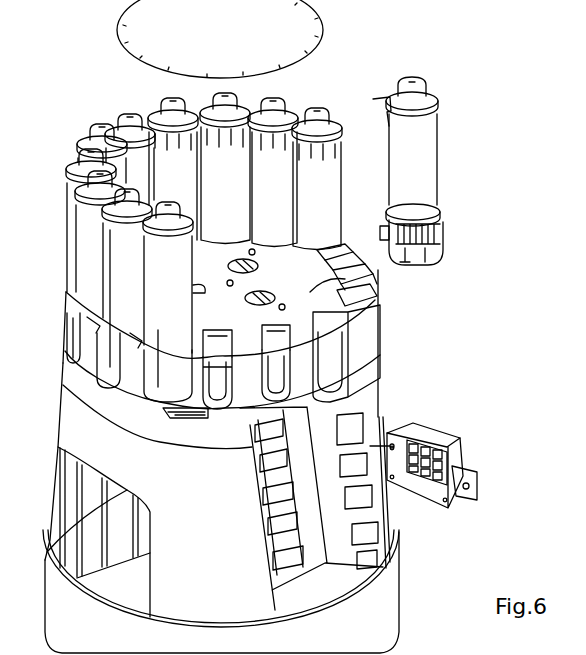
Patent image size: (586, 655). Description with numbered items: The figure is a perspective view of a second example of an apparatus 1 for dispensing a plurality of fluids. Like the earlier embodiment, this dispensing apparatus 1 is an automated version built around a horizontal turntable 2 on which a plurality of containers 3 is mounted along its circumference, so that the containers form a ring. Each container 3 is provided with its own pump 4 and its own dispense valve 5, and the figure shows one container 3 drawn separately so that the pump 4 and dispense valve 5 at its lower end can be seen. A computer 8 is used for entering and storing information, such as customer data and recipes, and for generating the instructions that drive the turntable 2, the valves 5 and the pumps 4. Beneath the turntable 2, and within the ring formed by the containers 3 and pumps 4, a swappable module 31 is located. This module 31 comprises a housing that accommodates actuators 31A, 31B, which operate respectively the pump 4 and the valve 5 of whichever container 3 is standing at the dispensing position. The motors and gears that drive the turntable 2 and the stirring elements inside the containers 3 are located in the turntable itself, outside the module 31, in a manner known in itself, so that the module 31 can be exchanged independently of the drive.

The apparatus 1 is at (463, 41).
The turntable 2 is at (367, 297).
The container 3 is at (430, 160).
The pump 4 is at (392, 205).
The dispense valve 5 is at (441, 261).
The computer 8 is at (68, 422).
The swappable module 31 is at (478, 473).
The actuator 31A is at (462, 441).
The actuator 31B is at (478, 491).